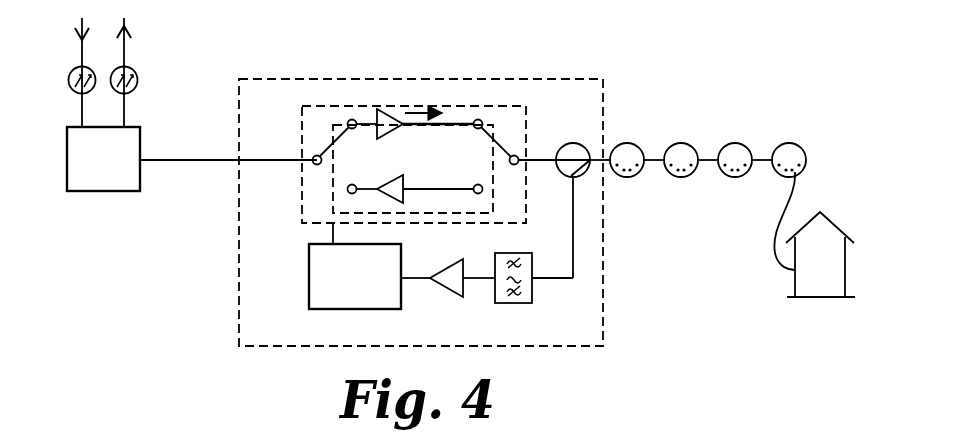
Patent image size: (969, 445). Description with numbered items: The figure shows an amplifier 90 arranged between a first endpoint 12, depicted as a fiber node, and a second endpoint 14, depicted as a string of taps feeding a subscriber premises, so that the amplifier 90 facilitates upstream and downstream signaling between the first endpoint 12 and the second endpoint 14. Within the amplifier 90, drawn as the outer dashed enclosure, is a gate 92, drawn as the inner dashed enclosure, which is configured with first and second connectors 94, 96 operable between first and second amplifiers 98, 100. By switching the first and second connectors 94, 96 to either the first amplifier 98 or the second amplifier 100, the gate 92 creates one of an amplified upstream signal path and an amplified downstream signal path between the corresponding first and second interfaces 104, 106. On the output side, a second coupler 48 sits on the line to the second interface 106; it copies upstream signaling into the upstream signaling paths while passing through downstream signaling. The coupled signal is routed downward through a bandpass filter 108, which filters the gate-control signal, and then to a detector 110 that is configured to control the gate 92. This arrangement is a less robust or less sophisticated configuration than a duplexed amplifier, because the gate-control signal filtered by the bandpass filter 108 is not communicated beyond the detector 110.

The first endpoint 12 is at (176, 73).
The second endpoint 14 is at (721, 98).
The second coupler 48 is at (560, 174).
The amplifier 90 is at (410, 79).
The gate 92 is at (526, 123).
The first connector 94 is at (318, 155).
The second connector 96 is at (485, 131).
The first amplifier 98 is at (377, 122).
The second amplifier 100 is at (404, 182).
The first interface 104 is at (239, 160).
The second interface 106 is at (605, 160).
The bandpass filter 108 is at (533, 288).
The detector 110 is at (309, 277).